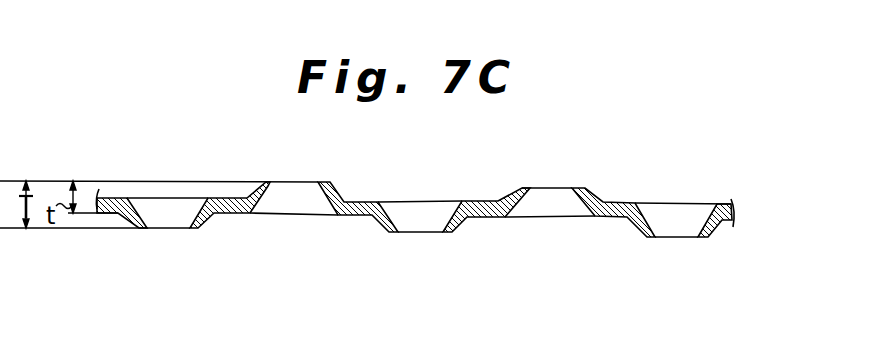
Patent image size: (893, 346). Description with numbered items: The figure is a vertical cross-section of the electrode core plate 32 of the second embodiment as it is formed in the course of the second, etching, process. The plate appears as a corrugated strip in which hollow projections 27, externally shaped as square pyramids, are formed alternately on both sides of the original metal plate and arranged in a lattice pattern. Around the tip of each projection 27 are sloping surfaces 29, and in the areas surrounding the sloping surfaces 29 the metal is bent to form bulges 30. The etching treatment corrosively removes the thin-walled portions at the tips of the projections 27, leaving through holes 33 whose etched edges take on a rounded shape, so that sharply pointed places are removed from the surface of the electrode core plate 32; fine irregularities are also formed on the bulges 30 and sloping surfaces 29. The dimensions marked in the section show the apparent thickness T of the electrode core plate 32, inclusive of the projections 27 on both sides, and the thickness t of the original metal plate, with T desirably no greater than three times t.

The hollow projection 27 is at (266, 177).
The sloping surface 29 is at (333, 188).
The bulge 30 is at (384, 200).
The electrode core plate 32 is at (503, 156).
The through hole 33 is at (292, 189).